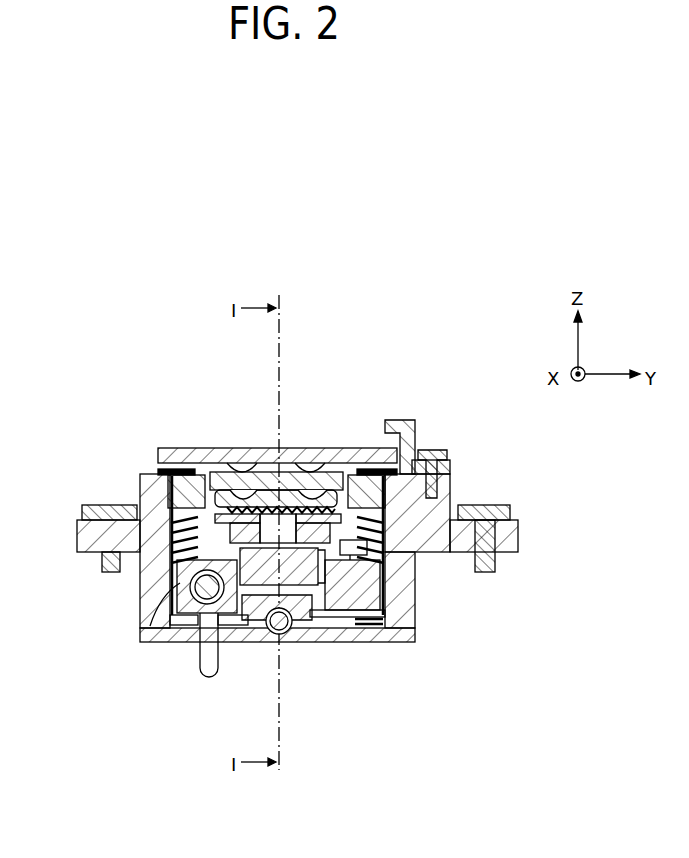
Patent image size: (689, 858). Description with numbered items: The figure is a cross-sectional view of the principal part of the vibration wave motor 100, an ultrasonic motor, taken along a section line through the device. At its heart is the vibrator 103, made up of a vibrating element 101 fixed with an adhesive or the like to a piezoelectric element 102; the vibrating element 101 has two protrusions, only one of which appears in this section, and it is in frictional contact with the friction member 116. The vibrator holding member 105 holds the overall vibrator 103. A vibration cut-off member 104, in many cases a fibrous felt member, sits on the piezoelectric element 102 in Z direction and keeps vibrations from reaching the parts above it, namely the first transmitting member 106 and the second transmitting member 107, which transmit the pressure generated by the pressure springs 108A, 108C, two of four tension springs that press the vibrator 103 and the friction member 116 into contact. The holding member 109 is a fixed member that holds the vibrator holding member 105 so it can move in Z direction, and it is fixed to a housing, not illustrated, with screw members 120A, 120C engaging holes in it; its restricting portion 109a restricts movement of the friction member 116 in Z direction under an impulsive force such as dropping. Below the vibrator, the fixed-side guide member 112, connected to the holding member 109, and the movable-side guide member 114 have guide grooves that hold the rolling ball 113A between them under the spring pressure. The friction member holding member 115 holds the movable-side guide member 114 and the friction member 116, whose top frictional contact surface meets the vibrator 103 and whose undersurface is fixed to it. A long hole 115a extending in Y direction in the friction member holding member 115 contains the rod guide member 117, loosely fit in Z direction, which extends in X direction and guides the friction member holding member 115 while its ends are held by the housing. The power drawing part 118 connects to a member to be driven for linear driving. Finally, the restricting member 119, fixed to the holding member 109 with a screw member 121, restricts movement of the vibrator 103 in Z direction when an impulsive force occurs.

The vibration wave motor 100 is at (72, 323).
The vibrating element 101 is at (326, 496).
The piezoelectric element 102 is at (290, 498).
The vibrator 103 is at (365, 358).
The vibration cut-off member 104 is at (253, 470).
The vibrator holding member 105 is at (180, 469).
The first transmitting member 106 is at (225, 492).
The second transmitting member 107 is at (205, 478).
The pressure spring 108A is at (438, 468).
The pressure spring 108C is at (160, 471).
The holding member 109 is at (172, 500).
The restricting portion 109a is at (368, 574).
The fixed-side guide member 112 is at (362, 643).
The rolling ball 113A is at (268, 640).
The movable-side guide member 114 is at (312, 628).
The friction member holding member 115 is at (382, 556).
The long hole 115a is at (176, 590).
The friction member 116 is at (388, 595).
The guide member 117 is at (197, 584).
The power drawing part 118 is at (206, 670).
The restricting member 119 is at (393, 420).
The screw member 120A is at (100, 505).
The screw member 120C is at (497, 519).
The screw member 121 is at (430, 455).